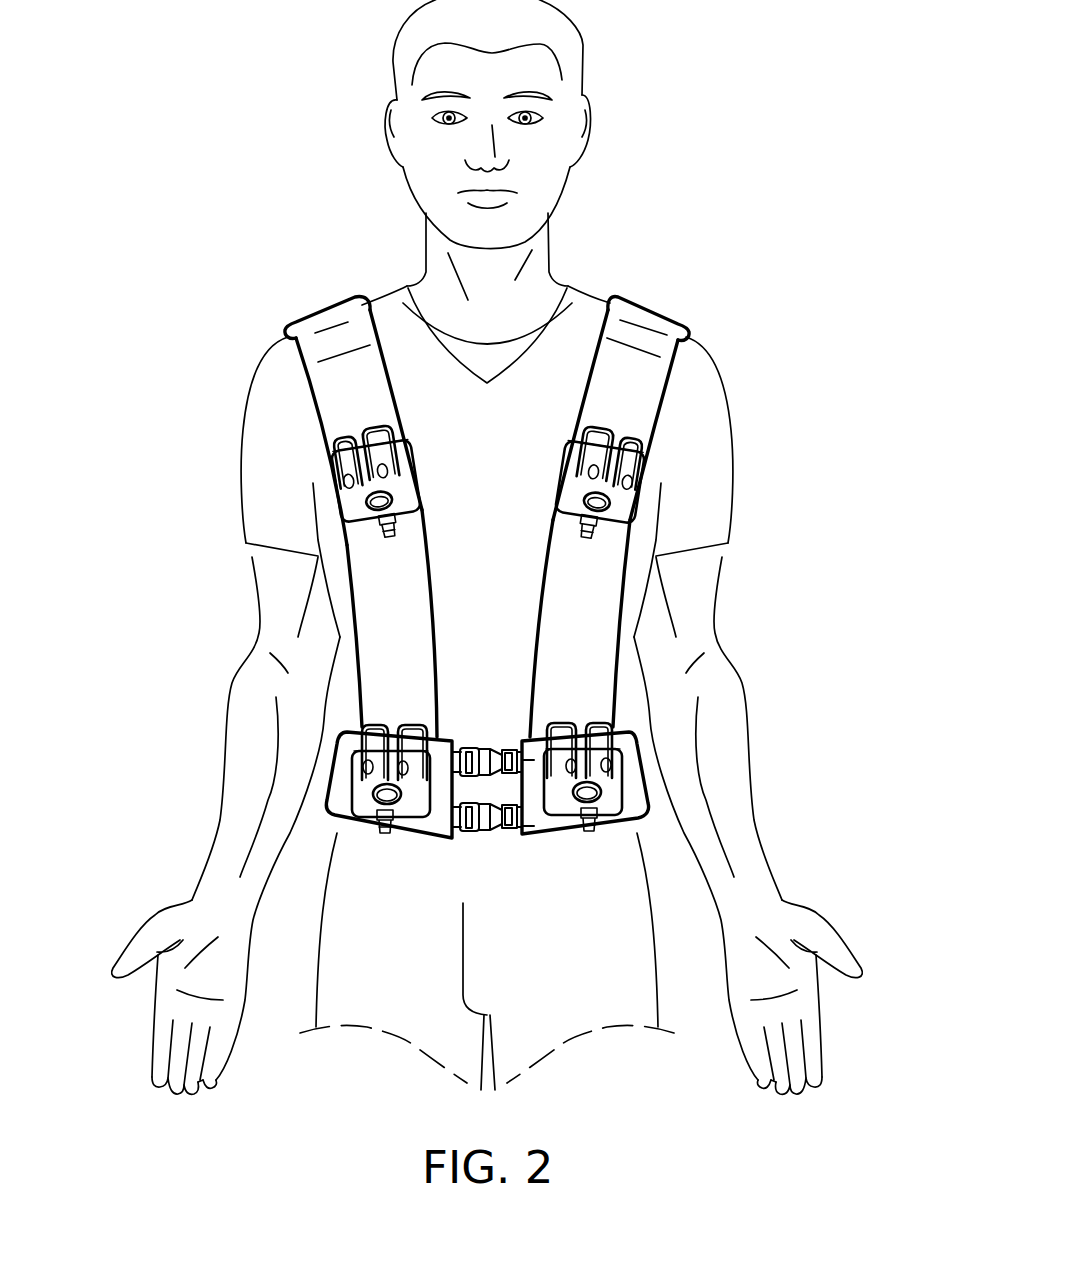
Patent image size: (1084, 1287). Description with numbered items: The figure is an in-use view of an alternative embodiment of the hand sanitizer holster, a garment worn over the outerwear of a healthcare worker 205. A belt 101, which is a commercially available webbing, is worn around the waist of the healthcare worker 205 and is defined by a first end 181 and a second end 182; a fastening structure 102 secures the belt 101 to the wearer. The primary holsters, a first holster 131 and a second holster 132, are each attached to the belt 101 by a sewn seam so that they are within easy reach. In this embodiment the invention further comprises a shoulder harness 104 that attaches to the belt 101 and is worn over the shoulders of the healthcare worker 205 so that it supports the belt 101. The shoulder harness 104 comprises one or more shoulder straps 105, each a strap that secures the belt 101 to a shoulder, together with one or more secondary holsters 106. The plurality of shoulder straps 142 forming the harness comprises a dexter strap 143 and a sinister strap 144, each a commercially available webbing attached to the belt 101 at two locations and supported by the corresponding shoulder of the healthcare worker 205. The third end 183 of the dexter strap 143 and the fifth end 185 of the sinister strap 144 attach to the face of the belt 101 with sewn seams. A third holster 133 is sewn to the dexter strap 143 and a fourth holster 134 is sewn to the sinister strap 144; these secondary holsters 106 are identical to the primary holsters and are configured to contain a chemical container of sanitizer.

The belt 101 is at (637, 797).
The fastening structure 102 is at (483, 845).
The shoulder harness 104 is at (658, 313).
The shoulder straps 105 is at (330, 304).
The secondary holsters 106 is at (550, 445).
The first holster 131 is at (413, 828).
The second holster 132 is at (602, 815).
The third holster 133 is at (623, 510).
The fourth holster 134 is at (410, 497).
The plurality of shoulder straps 142 is at (548, 598).
The dexter strap 143 is at (600, 600).
The sinister strap 144 is at (367, 585).
The first end 181 is at (447, 797).
The second end 182 is at (526, 798).
The third end 183 is at (532, 738).
The fifth end 185 is at (428, 712).
The healthcare worker 205 is at (552, 251).